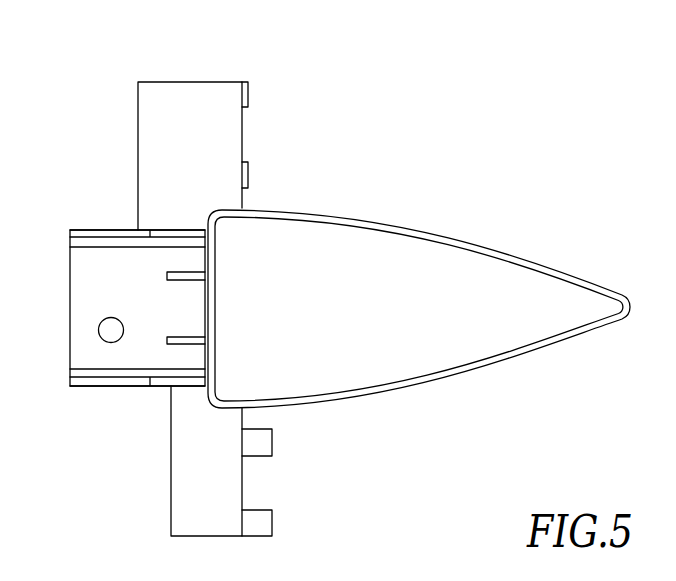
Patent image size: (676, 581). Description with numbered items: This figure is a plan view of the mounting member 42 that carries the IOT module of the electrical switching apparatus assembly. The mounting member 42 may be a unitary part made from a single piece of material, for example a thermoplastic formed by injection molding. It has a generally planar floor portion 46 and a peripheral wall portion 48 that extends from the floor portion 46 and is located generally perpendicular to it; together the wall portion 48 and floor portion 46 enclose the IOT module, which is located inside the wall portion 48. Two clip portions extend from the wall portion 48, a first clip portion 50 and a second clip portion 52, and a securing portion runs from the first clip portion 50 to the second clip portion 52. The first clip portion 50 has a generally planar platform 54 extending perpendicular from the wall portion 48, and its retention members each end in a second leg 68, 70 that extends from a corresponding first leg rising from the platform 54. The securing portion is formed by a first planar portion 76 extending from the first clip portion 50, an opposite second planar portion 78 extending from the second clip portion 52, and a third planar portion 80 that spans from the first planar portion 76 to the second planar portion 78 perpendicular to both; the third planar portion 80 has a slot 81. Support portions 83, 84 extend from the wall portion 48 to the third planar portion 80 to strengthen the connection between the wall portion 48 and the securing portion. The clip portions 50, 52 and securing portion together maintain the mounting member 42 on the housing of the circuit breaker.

The mounting member 42 is at (419, 324).
The floor portion 46 is at (487, 343).
The peripheral wall portion 48 is at (412, 230).
The first clip portion 50 is at (252, 474).
The second clip portion 52 is at (278, 108).
The platform 54 is at (195, 505).
The second leg 68 is at (267, 527).
The second leg 70 is at (262, 443).
The first planar portion 76 is at (113, 388).
The second planar portion 78 is at (158, 232).
The third planar portion 80 is at (109, 299).
The slot 81 is at (100, 332).
The support portion 83 is at (193, 338).
The support portion 84 is at (175, 279).